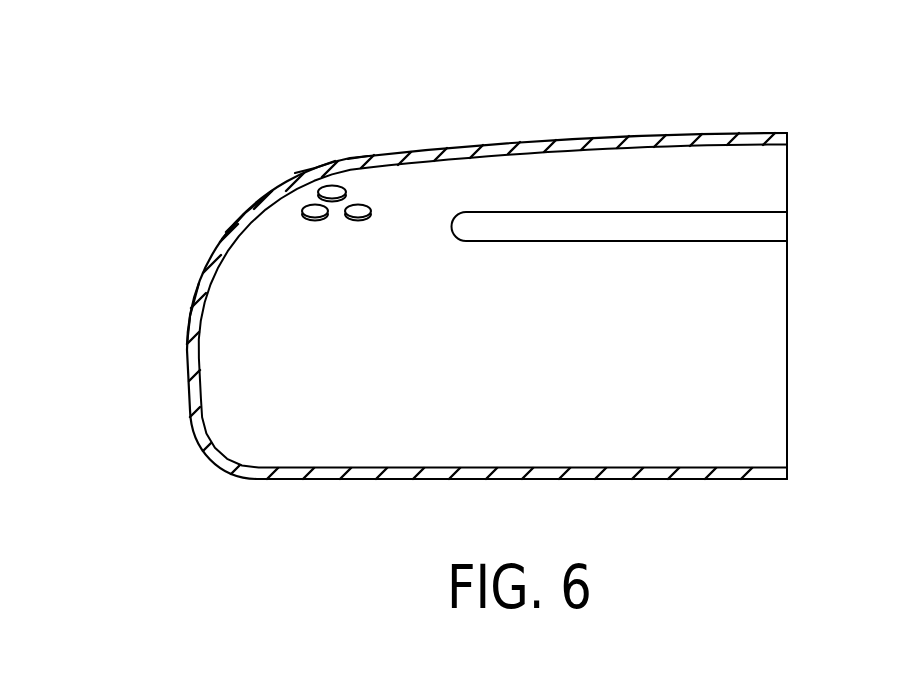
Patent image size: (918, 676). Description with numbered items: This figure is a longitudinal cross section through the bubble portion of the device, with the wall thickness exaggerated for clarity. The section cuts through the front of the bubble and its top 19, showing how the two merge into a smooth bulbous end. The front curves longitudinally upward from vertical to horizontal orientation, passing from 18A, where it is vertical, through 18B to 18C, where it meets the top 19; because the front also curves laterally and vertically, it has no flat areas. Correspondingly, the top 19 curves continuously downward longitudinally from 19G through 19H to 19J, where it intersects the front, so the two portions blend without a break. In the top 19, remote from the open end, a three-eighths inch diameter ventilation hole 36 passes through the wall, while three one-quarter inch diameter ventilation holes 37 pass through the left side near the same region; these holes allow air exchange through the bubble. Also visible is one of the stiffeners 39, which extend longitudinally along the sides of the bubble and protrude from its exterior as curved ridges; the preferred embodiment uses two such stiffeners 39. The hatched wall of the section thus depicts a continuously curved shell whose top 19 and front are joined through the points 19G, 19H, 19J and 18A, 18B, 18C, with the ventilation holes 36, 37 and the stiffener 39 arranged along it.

The top portion 19 is at (635, 138).
The stiffeners 39 is at (478, 238).
The ventilation holes 37 is at (348, 190).
The ventilation hole 36 is at (325, 157).
The top curve intermediate point 19H is at (303, 167).
The top curve starting point 19G is at (357, 153).
The top curve end point 19J is at (250, 195).
The front curve end point 18C is at (218, 238).
The front curve intermediate point 18B is at (193, 298).
The front curve starting point 18A is at (187, 335).